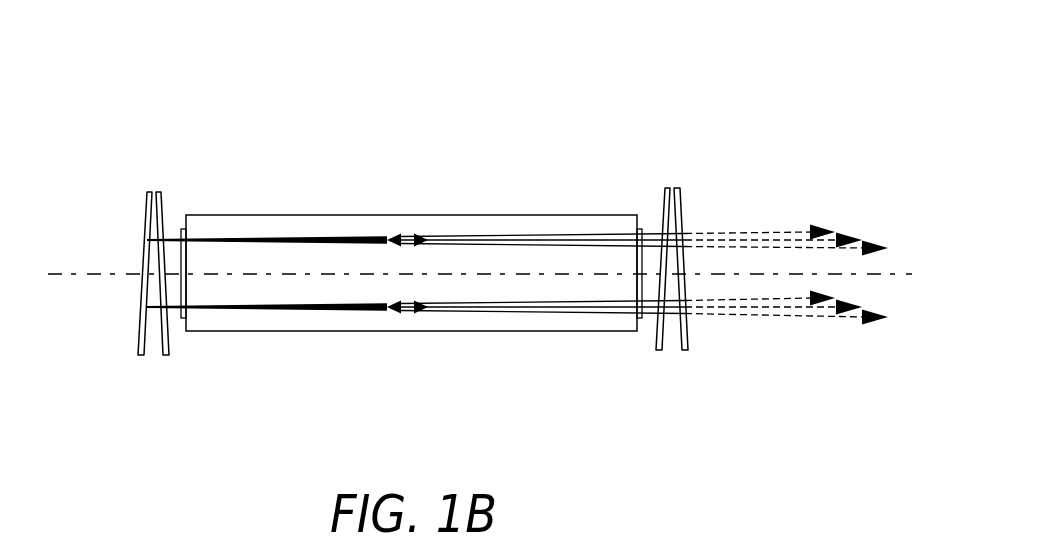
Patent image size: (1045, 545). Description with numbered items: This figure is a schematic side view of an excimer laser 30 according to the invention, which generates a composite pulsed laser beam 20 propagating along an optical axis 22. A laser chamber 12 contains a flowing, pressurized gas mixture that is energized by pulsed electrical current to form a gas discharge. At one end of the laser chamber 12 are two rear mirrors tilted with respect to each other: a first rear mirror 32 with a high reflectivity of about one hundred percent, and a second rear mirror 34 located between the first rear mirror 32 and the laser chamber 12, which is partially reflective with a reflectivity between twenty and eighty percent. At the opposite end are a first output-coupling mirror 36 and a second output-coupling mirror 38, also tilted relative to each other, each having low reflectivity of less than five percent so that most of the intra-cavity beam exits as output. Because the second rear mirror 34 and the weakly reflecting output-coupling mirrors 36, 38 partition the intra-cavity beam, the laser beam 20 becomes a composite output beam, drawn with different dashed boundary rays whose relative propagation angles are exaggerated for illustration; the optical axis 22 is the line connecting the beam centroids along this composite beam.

The excimer laser 30 is at (792, 91).
The laser chamber 12 is at (333, 216).
The laser beam 20 is at (737, 228).
The optical axis 22 is at (74, 273).
The first rear mirror 32 is at (148, 190).
The second rear mirror 34 is at (158, 190).
The first output-coupling mirror 36 is at (667, 187).
The second output-coupling mirror 38 is at (677, 187).